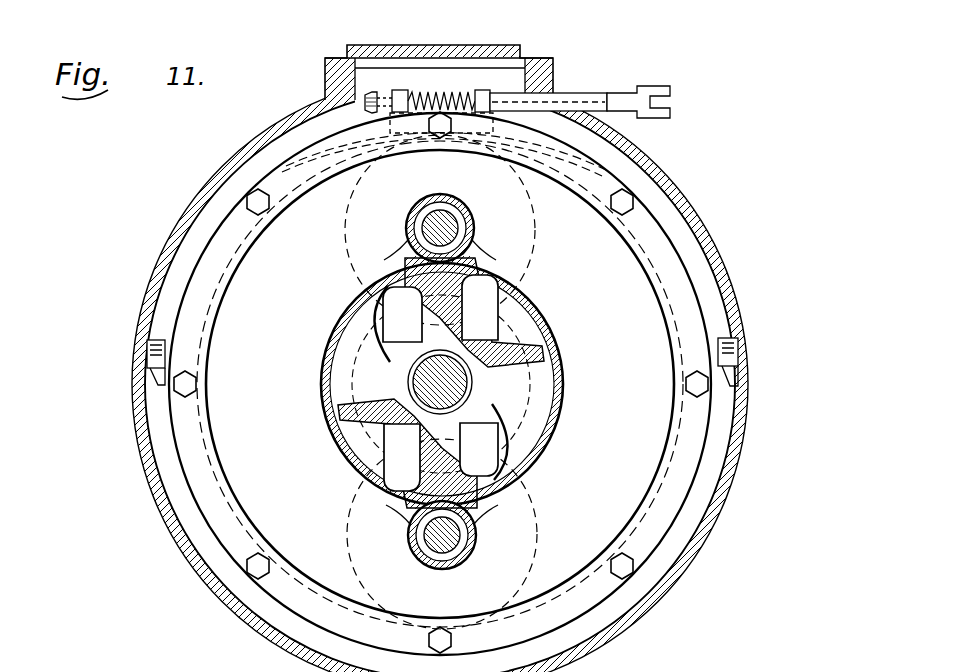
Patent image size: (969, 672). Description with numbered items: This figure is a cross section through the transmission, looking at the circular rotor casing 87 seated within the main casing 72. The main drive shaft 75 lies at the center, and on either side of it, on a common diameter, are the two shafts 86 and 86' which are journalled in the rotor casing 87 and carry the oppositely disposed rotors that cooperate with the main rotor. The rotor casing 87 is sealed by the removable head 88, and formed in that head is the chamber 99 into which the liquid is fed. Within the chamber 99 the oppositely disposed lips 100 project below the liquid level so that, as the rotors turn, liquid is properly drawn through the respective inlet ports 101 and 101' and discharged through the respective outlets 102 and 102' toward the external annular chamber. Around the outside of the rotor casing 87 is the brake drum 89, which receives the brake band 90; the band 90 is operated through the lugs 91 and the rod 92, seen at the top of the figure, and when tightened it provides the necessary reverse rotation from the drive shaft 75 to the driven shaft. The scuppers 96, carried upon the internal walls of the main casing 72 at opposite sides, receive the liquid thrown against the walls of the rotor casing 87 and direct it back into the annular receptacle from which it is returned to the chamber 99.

The main casing 72 is at (708, 238).
The main drive shaft 75 is at (472, 388).
The shaft 86 is at (447, 535).
The shaft 86' is at (451, 232).
The rotor casing 87 is at (622, 163).
The removable head 88 is at (615, 244).
The brake drum 89 is at (202, 453).
The brake band 90 is at (328, 158).
The lugs 91 is at (403, 91).
The rod 92 is at (444, 97).
The scuppers 96 is at (150, 356).
The chamber 99 is at (538, 416).
The lips 100 is at (536, 350).
The inlet port 101 is at (388, 481).
The inlet port 101' is at (528, 301).
The outlet 102 is at (361, 314).
The outlet 102' is at (527, 449).